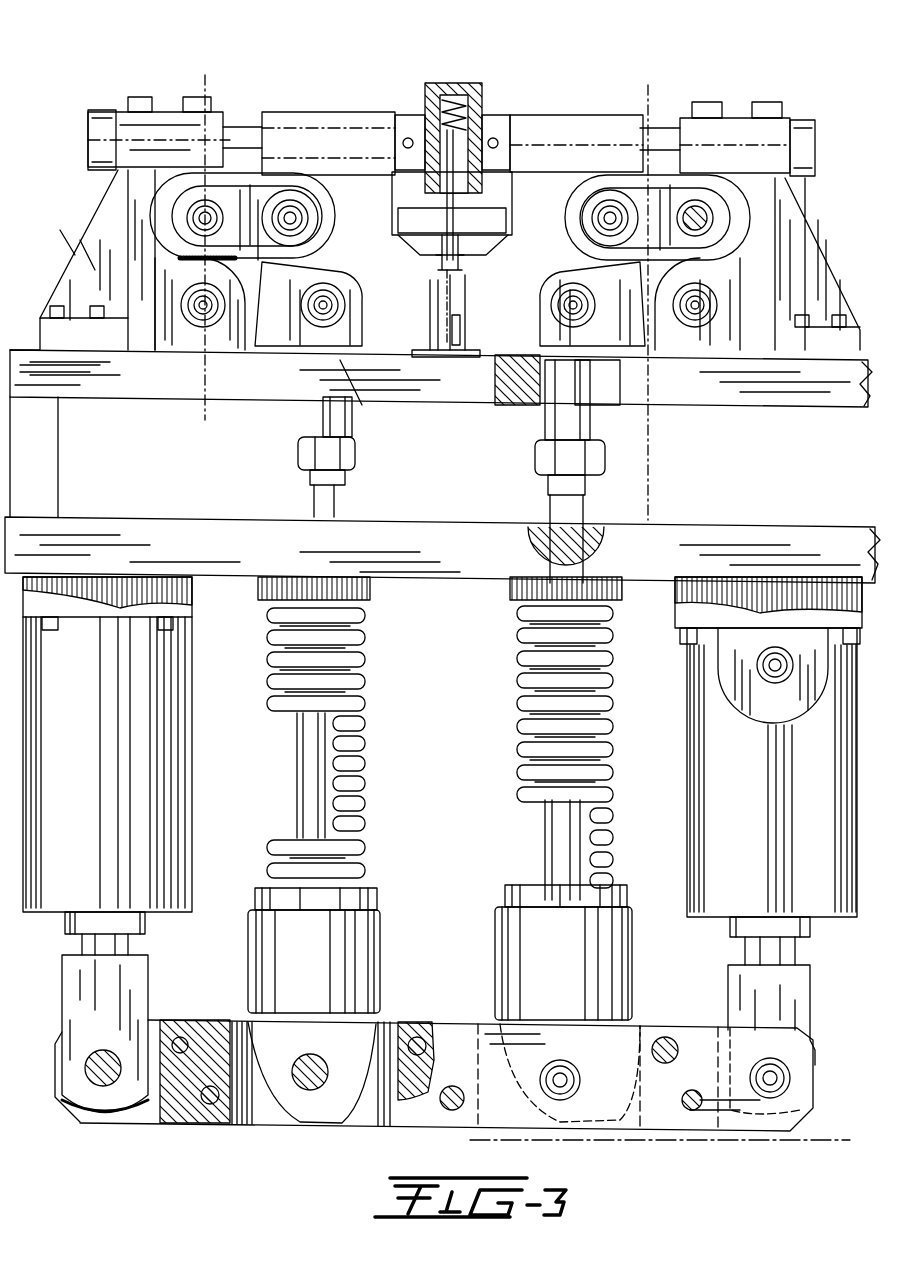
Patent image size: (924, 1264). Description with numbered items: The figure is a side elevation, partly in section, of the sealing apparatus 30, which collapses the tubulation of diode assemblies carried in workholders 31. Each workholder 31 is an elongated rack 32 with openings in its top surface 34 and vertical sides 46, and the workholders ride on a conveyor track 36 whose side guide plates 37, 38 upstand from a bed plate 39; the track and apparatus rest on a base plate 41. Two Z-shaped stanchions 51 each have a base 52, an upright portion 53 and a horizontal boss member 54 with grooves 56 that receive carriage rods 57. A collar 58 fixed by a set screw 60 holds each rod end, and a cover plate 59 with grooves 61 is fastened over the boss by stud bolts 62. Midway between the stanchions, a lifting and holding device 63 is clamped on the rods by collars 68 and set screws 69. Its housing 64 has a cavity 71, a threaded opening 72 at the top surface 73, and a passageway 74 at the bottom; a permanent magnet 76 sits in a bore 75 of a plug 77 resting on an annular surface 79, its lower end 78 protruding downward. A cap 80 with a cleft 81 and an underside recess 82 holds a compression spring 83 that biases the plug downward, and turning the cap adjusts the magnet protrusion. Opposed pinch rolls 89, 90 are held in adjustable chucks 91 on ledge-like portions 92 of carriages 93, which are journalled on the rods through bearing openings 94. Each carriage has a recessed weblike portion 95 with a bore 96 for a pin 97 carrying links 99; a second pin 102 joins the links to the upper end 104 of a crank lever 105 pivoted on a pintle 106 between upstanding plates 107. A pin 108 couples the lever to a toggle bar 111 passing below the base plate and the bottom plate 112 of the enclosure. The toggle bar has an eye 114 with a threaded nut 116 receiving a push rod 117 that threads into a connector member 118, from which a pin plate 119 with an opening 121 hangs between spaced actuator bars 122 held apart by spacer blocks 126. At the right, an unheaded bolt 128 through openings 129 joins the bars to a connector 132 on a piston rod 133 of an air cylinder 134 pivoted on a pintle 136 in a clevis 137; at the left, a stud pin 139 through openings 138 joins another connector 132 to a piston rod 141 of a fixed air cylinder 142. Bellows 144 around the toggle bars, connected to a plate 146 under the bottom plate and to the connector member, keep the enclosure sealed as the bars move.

The apparatus 30 is at (798, 68).
The workholder 31 is at (455, 275).
The elongated rack 32 is at (440, 300).
The top surface 34 is at (445, 272).
The conveyor track 36 is at (425, 328).
The side guide plate 37 is at (440, 288).
The side guide plate 38 is at (455, 305).
The bed plate 39 is at (470, 350).
The base plate 41 is at (175, 395).
The vertical side 46 is at (458, 318).
The stanchion 51 is at (55, 235).
The base 52 is at (95, 358).
The upright portion 53 is at (128, 210).
The horizontal boss member 54 is at (110, 165).
The groove 56 is at (88, 114).
The carriage rod 57 is at (275, 125).
The collar 58 is at (104, 110).
The cover plate 59 is at (168, 108).
The set screw 60 is at (805, 120).
The groove 61 is at (666, 302).
The stud bolt 62 is at (200, 90).
The lifting and holding device 63 is at (500, 78).
The housing 64 is at (425, 100).
The collar 68 is at (403, 138).
The set screw 69 is at (405, 138).
The cavity 71 is at (510, 150).
The opening 72 is at (440, 88).
The top surface 73 is at (478, 82).
The passageway 74 is at (452, 203).
The bore 75 is at (490, 191).
The permanent magnet 76 is at (488, 223).
The plug 77 is at (440, 175).
The lower end 78 is at (434, 223).
The annular surface 79 is at (445, 200).
The cap 80 is at (463, 92).
The cleft 81 is at (450, 92).
The recess 82 is at (482, 92).
The compression spring 83 is at (430, 118).
The first pinch roll 89 is at (453, 248).
The second pinch roll 90 is at (465, 252).
The chuck 91 is at (520, 241).
The ledge-like portion 92 is at (530, 232).
The carriage 93 is at (585, 115).
The bearing opening 94 is at (322, 112).
The recessed weblike portion 95 is at (575, 250).
The bore 96 is at (305, 210).
The pin 97 is at (310, 222).
The link 99 is at (165, 200).
The second pin 102 is at (450, 227).
The upper end 104 is at (232, 190).
The crank lever 105 is at (262, 342).
The pintle 106 is at (222, 305).
The upstanding plate 107 is at (238, 328).
The pin 108 is at (372, 276).
The toggle bar 111 is at (355, 420).
The bottom plate 112 is at (125, 528).
The eye 114 is at (495, 378).
The threaded nut 116 is at (352, 452).
The push rod 117 is at (335, 500).
The connector member 118 is at (492, 926).
The pin plate 119 is at (262, 945).
The opening 121 is at (293, 1062).
The actuator bar 122 is at (160, 1020).
The spacer block 126 is at (193, 1124).
The unheaded bolt 128 is at (805, 1098).
The opening 129 is at (792, 1080).
The connector 132 is at (70, 985).
The piston rod 133 is at (745, 950).
The air cylinder 134 is at (692, 835).
The pintle 136 is at (780, 646).
The clevis 137 is at (765, 598).
The opening 138 is at (70, 1105).
The stud pin 139 is at (105, 1050).
The piston rod 141 is at (132, 942).
The air cylinder 142 is at (190, 870).
The bellows 144 is at (365, 660).
The plate 146 is at (372, 590).